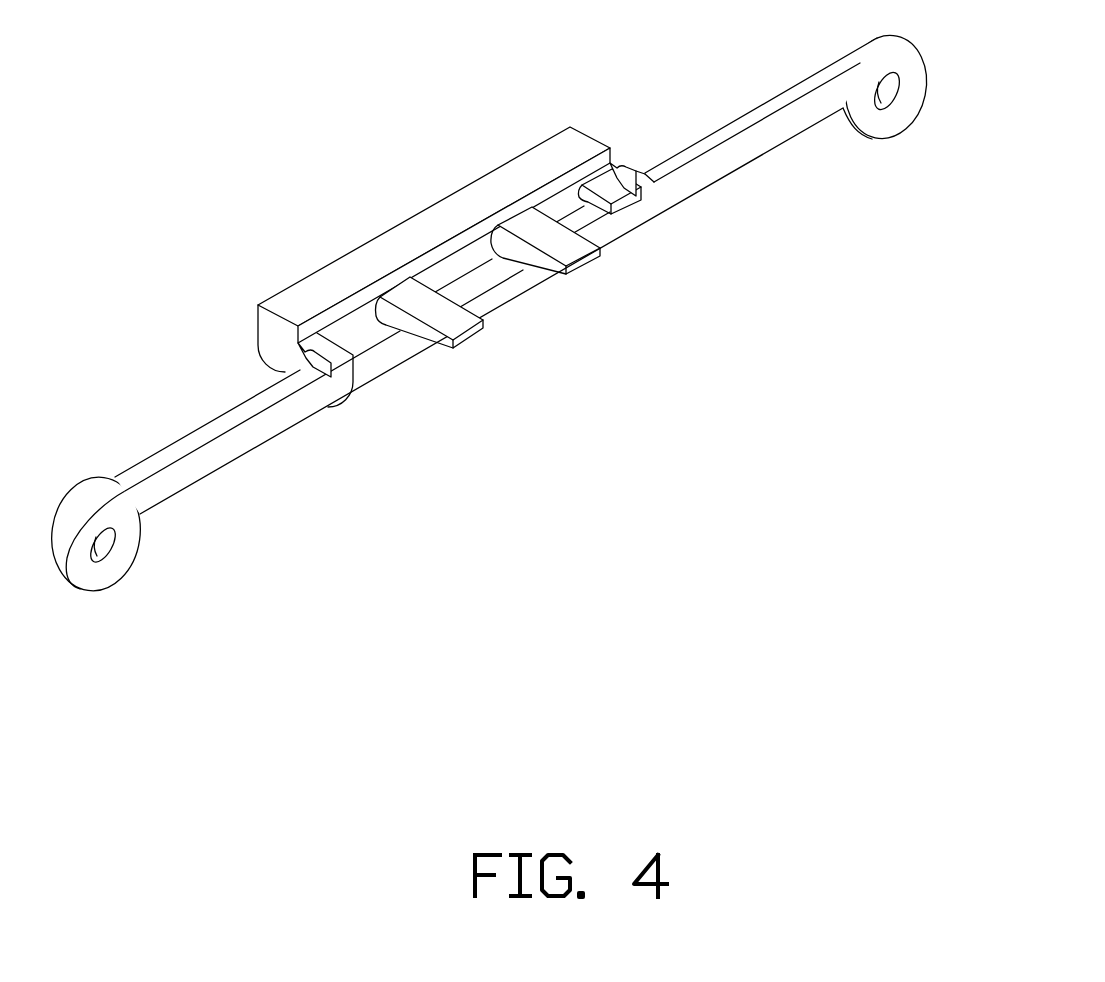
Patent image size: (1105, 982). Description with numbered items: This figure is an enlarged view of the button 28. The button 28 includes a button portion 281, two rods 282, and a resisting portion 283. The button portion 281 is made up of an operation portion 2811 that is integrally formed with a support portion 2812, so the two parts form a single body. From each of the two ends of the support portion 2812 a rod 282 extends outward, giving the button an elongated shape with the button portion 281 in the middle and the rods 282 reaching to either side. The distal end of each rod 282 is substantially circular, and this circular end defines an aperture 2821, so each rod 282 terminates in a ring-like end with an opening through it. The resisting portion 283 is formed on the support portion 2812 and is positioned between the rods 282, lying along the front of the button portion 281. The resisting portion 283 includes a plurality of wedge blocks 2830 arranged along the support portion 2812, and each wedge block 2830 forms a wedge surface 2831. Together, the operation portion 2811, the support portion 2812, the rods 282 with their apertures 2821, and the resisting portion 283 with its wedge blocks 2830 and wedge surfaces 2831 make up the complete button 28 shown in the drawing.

The button 28 is at (572, 304).
The button portion 281 is at (417, 248).
The operation portion 2811 is at (434, 226).
The support portion 2812 is at (367, 340).
The rod 282 is at (572, 312).
The aperture 2821 is at (893, 92).
The resisting portion 283 is at (491, 302).
The wedge block 2830 is at (578, 252).
The wedge surface 2831 is at (546, 284).